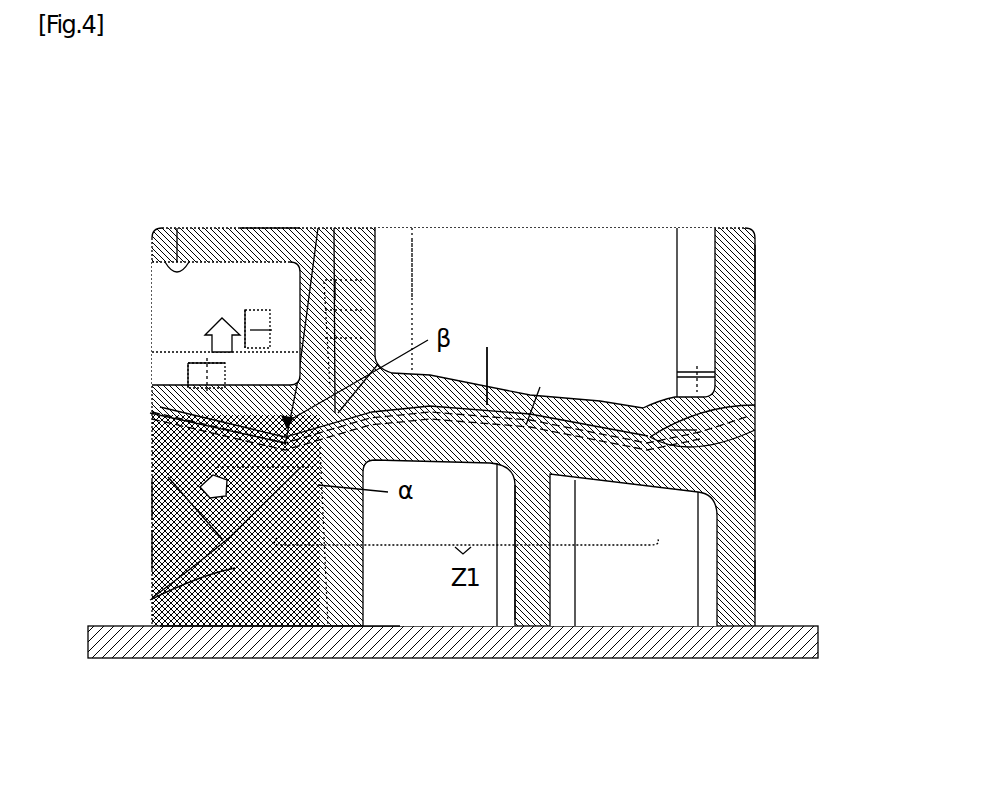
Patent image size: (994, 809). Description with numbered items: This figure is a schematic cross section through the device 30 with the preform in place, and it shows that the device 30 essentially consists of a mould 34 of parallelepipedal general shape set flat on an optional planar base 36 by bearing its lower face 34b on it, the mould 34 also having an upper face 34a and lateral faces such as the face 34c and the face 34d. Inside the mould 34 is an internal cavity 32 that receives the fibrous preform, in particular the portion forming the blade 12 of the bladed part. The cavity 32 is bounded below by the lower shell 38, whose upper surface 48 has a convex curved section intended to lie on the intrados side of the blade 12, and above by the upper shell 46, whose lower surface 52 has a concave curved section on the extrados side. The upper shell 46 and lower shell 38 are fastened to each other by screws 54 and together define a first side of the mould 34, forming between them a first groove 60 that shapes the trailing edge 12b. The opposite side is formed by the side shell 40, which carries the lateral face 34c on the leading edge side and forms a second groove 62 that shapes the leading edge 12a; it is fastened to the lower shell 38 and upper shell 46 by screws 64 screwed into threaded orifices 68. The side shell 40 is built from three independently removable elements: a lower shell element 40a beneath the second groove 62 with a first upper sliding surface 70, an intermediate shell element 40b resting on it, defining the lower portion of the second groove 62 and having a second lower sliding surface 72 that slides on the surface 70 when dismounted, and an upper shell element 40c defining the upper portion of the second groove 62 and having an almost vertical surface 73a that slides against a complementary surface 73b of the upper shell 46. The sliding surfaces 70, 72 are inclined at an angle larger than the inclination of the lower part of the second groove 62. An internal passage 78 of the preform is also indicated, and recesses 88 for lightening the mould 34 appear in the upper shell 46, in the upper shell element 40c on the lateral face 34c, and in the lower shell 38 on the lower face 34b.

The blade 12 is at (516, 398).
The leading edge 12a is at (150, 413).
The trailing edge 12b is at (727, 440).
The device 30 is at (840, 315).
The internal cavity 32 is at (377, 273).
The mould 34 is at (778, 527).
The upper face 34a is at (262, 228).
The lower face 34b is at (230, 623).
The lateral face 34c is at (152, 545).
The lateral face 34d is at (750, 470).
The base 36 is at (822, 600).
The lower shell 38 is at (750, 580).
The side shell 40 is at (145, 236).
The lower shell element 40a is at (183, 617).
The intermediate shell element 40b is at (152, 500).
The upper shell element 40c is at (177, 228).
The upper shell 46 is at (750, 267).
The upper surface 48 is at (600, 440).
The lower surface 52 is at (487, 362).
The screws 54 is at (687, 380).
The first groove 60 is at (655, 432).
The second groove 62 is at (324, 282).
The screws 64 is at (192, 362).
The threaded orifices 68 is at (414, 283).
The first upper sliding surface 70 is at (160, 600).
The second lower sliding surface 72 is at (200, 482).
The vertical surface 73a is at (377, 273).
The complementary surface 73b is at (335, 280).
The internal passage 78 is at (540, 387).
The recesses 88 is at (663, 233).